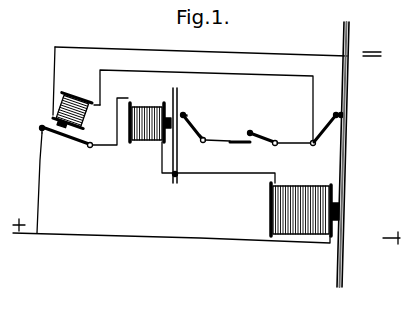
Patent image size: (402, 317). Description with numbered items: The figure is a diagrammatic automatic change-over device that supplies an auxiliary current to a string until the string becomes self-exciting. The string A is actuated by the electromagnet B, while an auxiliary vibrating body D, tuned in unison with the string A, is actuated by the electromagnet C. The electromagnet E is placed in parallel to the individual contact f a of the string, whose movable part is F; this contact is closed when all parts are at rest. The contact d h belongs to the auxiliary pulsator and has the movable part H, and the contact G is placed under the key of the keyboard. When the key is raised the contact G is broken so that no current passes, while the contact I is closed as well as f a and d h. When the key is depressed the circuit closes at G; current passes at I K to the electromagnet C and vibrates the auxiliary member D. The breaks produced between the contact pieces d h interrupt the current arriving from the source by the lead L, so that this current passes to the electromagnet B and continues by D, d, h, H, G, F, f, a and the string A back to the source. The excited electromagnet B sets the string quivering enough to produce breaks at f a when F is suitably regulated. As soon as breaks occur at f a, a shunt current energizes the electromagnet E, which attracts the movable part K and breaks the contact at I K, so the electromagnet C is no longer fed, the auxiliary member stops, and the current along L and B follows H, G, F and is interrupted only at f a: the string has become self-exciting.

The string A is at (348, 145).
The electromagnet B is at (272, 207).
The electromagnet C is at (149, 106).
The auxiliary vibrating body D is at (181, 112).
The electromagnet E is at (73, 93).
The movable part of the contact F is at (328, 128).
The contact G is at (265, 135).
The movable part of the contact H is at (192, 125).
The contact I is at (41, 132).
The movable part K is at (41, 126).
The lead L is at (125, 238).
The contact piece a is at (344, 114).
The contact piece d is at (185, 114).
The contact piece f is at (333, 112).
The contact piece h is at (186, 115).